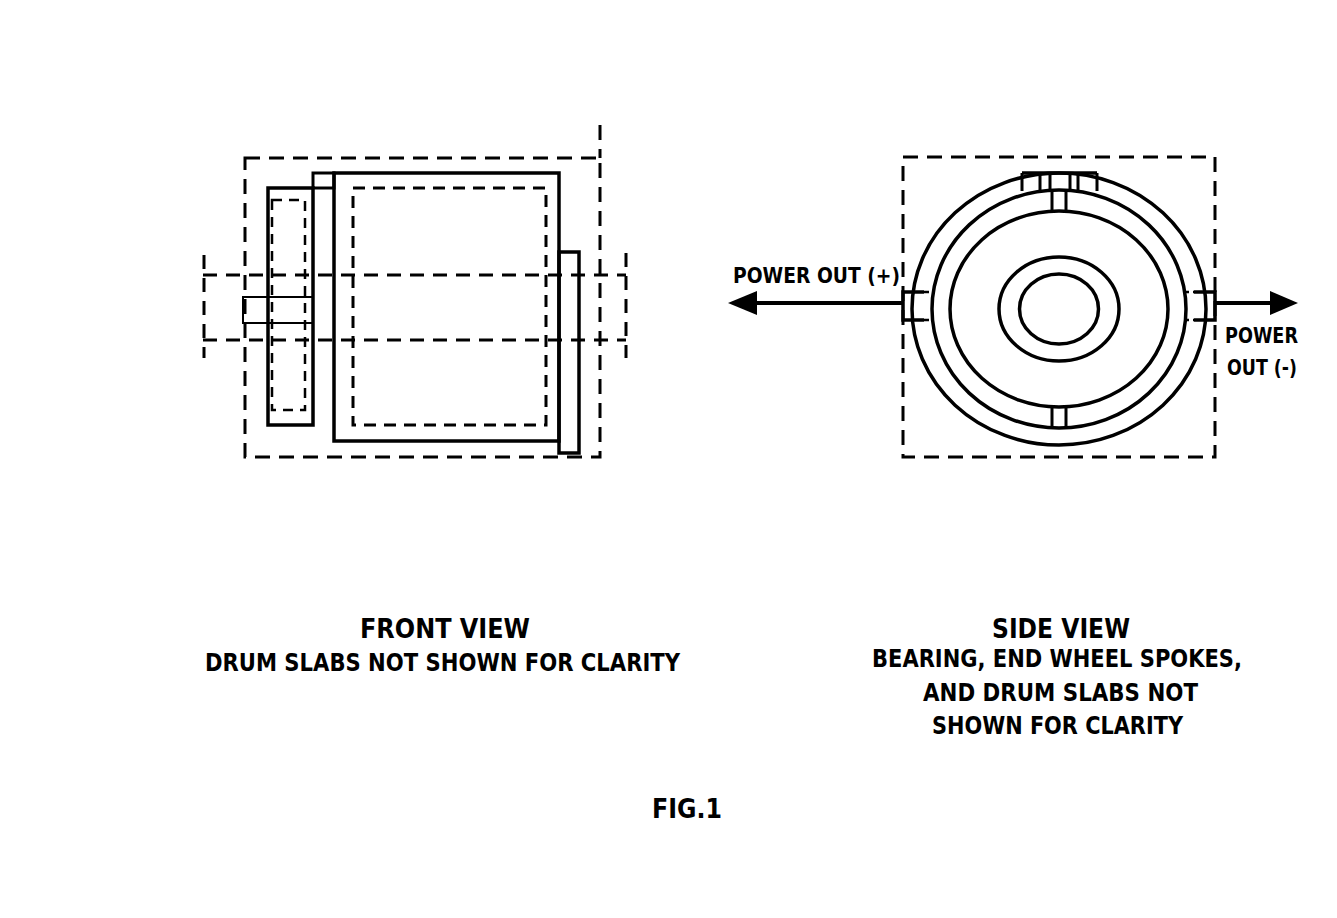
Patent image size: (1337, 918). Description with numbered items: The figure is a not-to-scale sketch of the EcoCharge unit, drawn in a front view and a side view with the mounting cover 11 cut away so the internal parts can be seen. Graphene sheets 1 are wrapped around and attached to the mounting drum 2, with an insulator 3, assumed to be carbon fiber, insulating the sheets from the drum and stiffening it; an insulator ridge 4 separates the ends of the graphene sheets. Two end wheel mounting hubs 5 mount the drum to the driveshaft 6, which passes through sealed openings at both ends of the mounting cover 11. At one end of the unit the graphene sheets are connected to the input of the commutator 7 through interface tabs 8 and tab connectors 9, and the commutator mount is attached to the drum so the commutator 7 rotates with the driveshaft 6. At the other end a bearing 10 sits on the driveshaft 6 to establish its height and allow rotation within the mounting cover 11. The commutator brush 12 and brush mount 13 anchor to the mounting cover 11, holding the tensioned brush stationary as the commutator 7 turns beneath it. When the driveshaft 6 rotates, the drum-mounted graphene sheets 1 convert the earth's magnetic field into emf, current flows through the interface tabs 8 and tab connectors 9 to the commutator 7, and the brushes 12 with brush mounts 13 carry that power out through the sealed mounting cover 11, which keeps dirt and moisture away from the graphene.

The graphene sheets 1 is at (957, 403).
The mounting drum 2 is at (447, 441).
The insulator 3 is at (767, 369).
The insulator ridge 4 is at (505, 173).
The end wheel mounting hubs 5 is at (557, 347).
The driveshaft 6 is at (625, 290).
The commutator 7 is at (288, 427).
The interface tabs 8 is at (317, 172).
The tab connectors 9 is at (737, 114).
The bearing 10 is at (573, 252).
The mounting cover 11 is at (600, 158).
The commutator brush 12 is at (243, 306).
The brush mount 13 is at (686, 300).